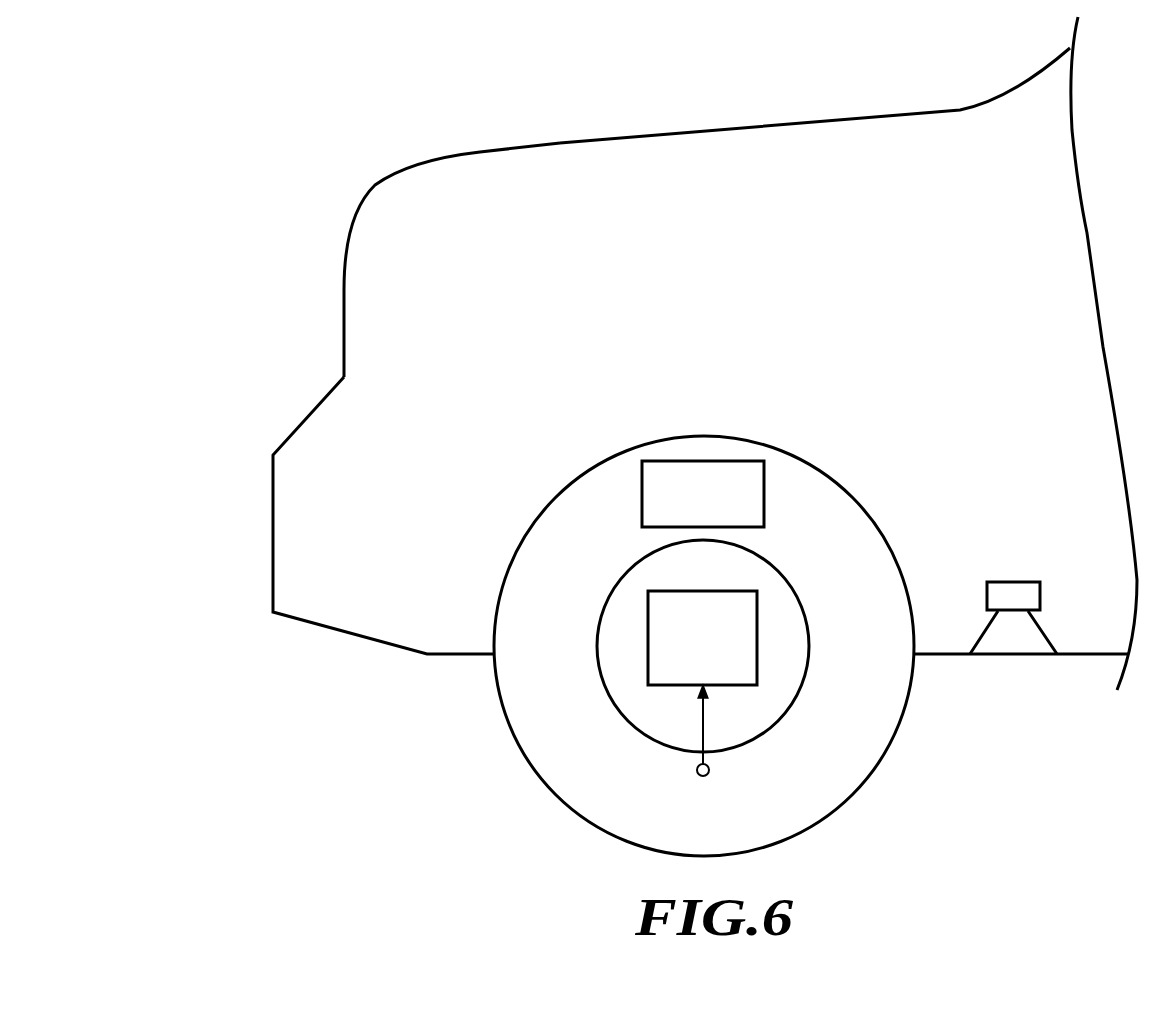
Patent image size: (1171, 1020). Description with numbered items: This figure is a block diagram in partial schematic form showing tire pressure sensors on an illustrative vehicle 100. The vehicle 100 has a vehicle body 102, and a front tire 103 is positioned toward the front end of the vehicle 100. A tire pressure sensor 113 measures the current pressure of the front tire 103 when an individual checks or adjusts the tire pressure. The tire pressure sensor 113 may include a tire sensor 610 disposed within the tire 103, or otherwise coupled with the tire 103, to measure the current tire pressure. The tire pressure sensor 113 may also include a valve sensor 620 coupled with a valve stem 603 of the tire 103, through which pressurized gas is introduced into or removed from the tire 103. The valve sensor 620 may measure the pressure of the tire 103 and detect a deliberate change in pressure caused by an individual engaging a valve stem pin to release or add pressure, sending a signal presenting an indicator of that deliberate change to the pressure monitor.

The vehicle 100 is at (275, 139).
The vehicle body 102 is at (533, 146).
The front tire 103 is at (533, 770).
The tire pressure sensor 113 is at (754, 543).
The tire sensor 610 is at (764, 501).
The valve sensor 620 is at (722, 677).
The valve stem 603 is at (707, 777).